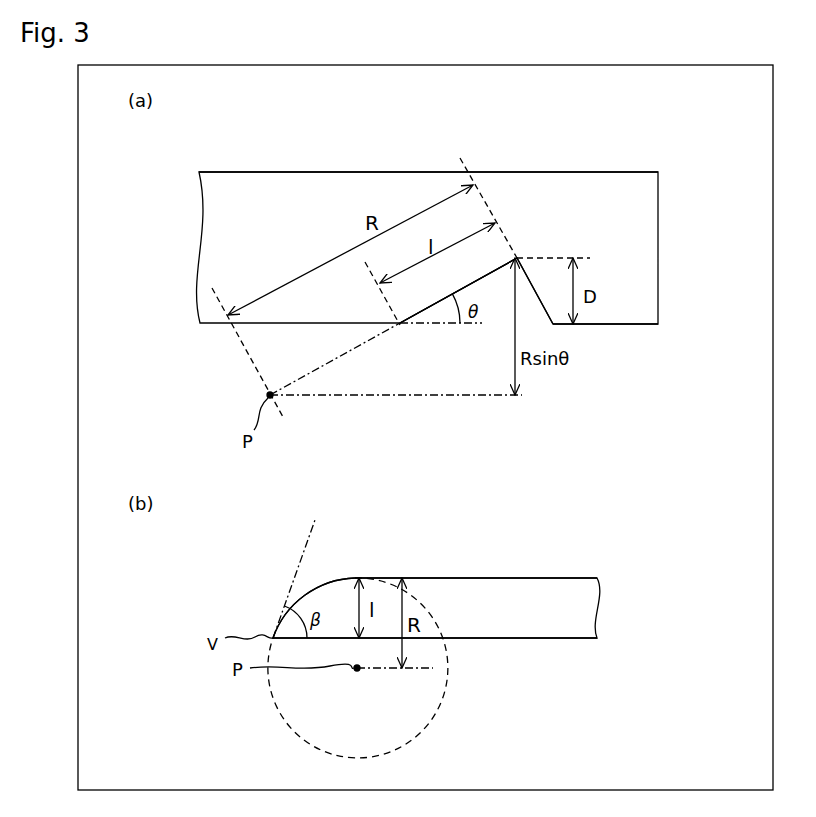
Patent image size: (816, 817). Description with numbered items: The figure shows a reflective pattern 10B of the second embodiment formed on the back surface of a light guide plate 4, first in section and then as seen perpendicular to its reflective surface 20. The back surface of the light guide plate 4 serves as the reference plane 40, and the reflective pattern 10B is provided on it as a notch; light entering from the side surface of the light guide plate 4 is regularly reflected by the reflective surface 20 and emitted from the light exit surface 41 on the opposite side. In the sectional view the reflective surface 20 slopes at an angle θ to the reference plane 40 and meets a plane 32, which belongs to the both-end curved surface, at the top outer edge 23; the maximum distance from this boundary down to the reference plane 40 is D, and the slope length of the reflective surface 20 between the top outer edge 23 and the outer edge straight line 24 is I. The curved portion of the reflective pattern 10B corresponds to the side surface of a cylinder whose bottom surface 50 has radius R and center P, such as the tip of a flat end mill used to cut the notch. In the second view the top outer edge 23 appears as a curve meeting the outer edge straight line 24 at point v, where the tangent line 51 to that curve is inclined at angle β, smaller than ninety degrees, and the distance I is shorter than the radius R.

The light guide plate 4 is at (587, 172).
The light exit surface 41 is at (640, 172).
The reference plane 40 is at (640, 325).
The plane 32 is at (540, 287).
The reflective pattern 10B is at (430, 310).
The reflective surface 20 is at (497, 270).
The top outer edge 23 is at (497, 578).
The outer edge straight line 24 is at (538, 640).
The bottom surface of the cylinder 50 is at (441, 700).
The tangent line 51 is at (301, 548).